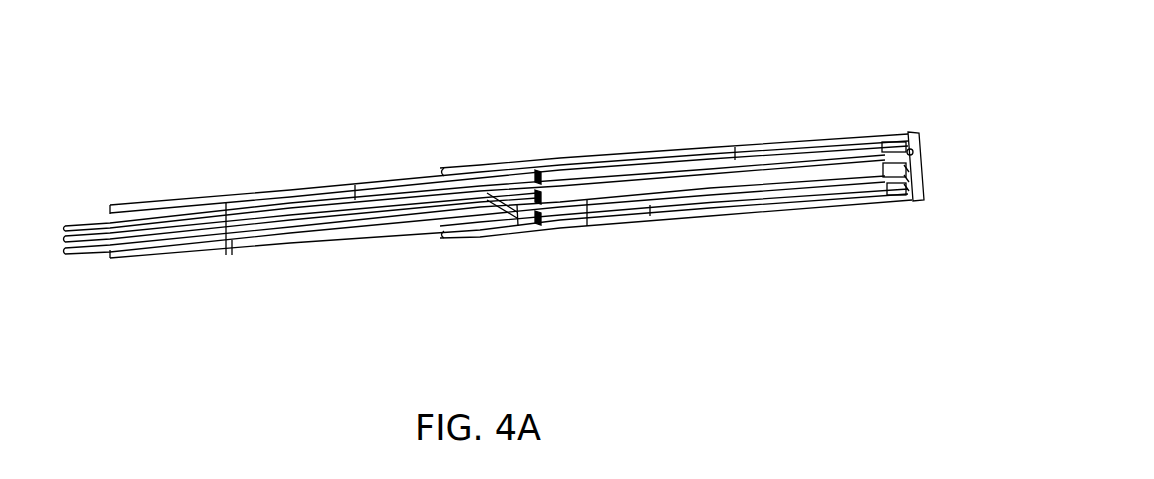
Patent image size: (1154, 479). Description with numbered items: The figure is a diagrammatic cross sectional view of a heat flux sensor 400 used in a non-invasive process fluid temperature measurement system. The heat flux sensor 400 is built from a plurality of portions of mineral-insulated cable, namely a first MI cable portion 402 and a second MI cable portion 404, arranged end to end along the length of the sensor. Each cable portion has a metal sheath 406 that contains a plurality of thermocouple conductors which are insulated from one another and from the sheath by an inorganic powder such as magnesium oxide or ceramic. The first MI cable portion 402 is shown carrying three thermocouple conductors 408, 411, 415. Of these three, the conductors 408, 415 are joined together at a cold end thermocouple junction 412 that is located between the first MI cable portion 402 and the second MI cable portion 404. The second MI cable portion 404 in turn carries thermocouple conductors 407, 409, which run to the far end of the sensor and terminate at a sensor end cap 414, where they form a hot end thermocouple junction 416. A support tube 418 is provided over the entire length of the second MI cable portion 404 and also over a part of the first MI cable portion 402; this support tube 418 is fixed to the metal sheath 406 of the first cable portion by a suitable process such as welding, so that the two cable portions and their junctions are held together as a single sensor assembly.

The heat flux sensor 400 is at (539, 95).
The first MI cable portion 402 is at (290, 262).
The second MI cable portion 404 is at (724, 220).
The metal sheath 406 is at (355, 185).
The thermocouple conductor 407 is at (735, 148).
The thermocouple conductor 408 is at (226, 203).
The thermocouple conductor 409 is at (587, 203).
The thermocouple conductor 411 is at (288, 192).
The cold end thermocouple junction 412 is at (517, 207).
The sensor end cap 414 is at (918, 143).
The thermocouple conductor 415 is at (230, 240).
The hot end thermocouple junction 416 is at (905, 203).
The support tube 418 is at (650, 216).